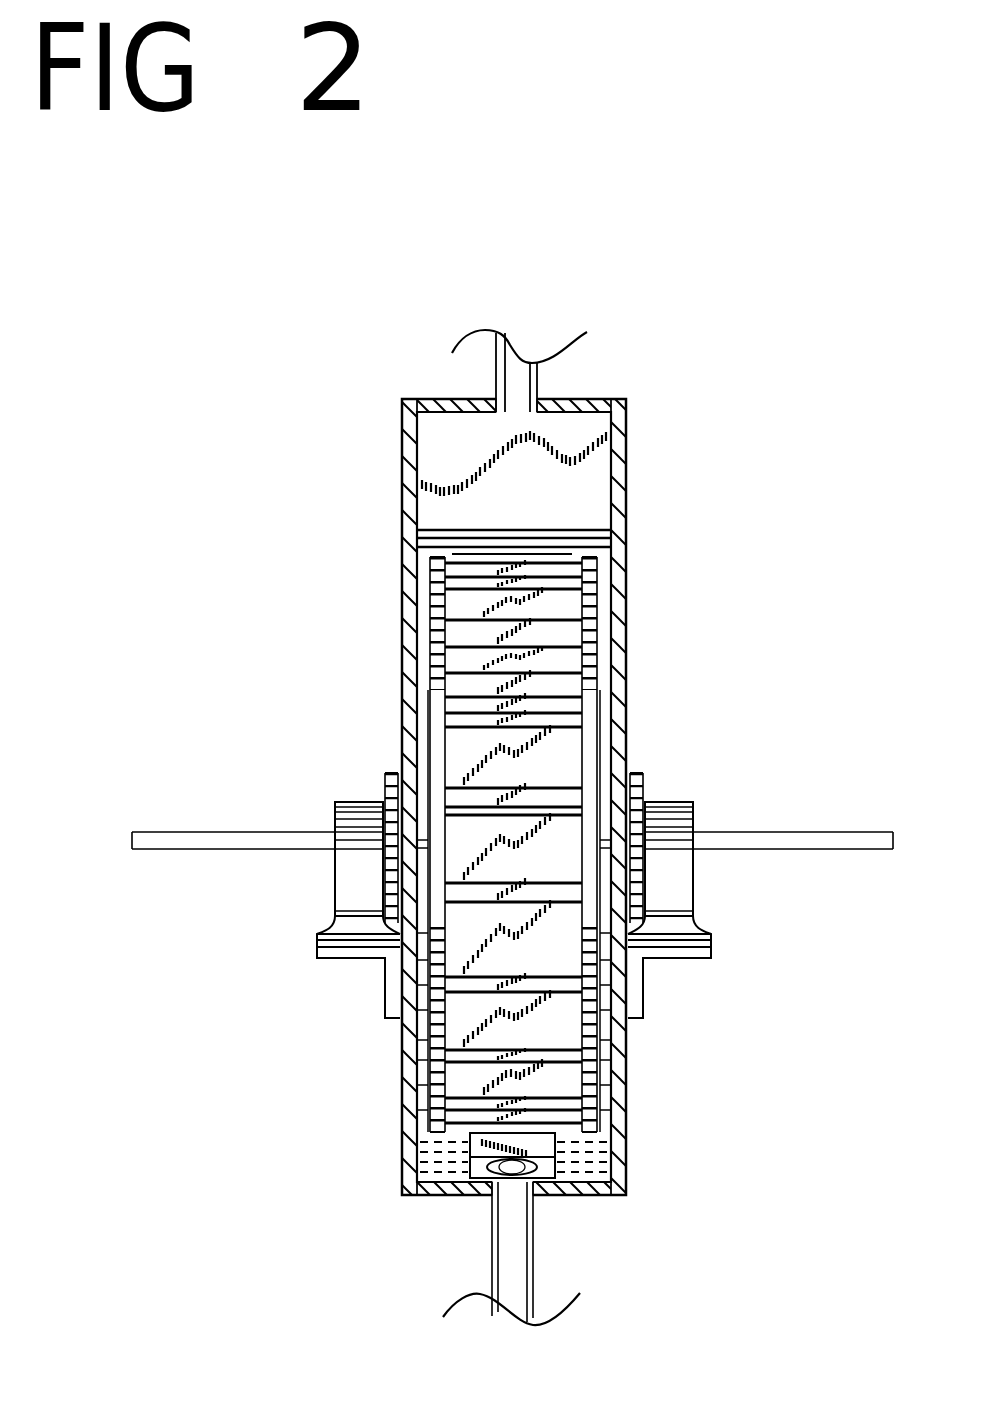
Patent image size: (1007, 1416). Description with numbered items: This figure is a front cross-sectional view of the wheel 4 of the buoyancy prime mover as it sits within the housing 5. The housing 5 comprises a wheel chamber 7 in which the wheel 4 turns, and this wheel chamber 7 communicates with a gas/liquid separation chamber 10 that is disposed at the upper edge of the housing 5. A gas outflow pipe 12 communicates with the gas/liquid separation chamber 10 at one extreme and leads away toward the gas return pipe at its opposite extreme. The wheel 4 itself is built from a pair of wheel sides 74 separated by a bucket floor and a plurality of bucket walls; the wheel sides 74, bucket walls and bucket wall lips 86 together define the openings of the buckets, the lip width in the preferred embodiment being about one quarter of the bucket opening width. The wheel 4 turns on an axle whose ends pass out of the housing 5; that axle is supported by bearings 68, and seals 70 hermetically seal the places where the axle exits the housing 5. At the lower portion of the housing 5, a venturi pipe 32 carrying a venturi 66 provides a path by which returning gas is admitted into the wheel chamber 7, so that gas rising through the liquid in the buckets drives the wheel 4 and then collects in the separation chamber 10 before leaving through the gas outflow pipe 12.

The wheel 4 is at (462, 1127).
The housing 5 is at (627, 463).
The wheel chamber 7 is at (420, 1055).
The gas/liquid separation chamber 10 is at (435, 473).
The gas outflow pipe 12 is at (537, 382).
The venturi pipe 32 is at (535, 1273).
The venturi 66 is at (560, 1168).
The bearings 68 is at (350, 801).
The seals 70 is at (393, 771).
The wheel sides 74 is at (437, 580).
The bucket wall lips 86 is at (553, 1067).